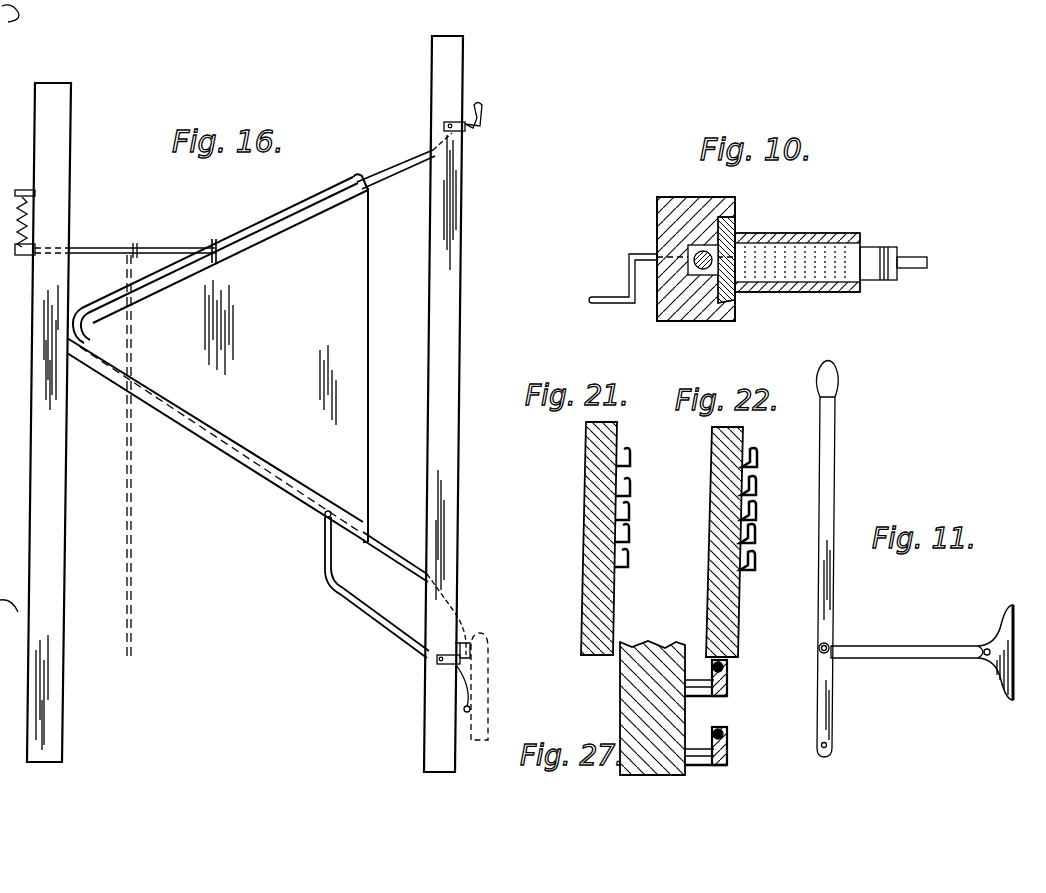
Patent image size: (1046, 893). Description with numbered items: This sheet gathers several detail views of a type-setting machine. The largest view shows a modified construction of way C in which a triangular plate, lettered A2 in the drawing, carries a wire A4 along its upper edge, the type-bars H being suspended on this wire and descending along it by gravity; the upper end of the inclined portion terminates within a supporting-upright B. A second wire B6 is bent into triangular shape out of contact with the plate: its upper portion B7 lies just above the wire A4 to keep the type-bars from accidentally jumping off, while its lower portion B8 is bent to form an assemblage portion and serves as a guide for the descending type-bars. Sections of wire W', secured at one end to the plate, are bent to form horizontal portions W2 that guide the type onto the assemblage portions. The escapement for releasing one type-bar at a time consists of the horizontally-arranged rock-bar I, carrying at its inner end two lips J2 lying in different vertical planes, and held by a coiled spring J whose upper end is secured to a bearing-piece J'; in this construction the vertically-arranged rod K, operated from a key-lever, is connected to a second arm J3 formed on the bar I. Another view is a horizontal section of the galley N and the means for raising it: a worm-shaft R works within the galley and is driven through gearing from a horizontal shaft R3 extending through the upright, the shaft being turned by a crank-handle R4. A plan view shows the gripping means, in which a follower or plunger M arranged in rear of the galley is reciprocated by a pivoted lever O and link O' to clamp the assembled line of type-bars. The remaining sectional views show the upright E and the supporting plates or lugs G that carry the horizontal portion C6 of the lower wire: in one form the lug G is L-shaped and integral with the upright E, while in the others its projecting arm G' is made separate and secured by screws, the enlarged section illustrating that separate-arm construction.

In FIG. 16, the supporting-upright B is at (28, 462).
In FIG. 16, the wire A4 is at (427, 404).
In FIG. 16, the panel section A2 is at (305, 353).
In FIG. 16, the way C is at (286, 365).
In FIG. 16, the vertically-arranged rod K is at (133, 515).
In FIG. 16, the bearing-piece J' is at (18, 182).
In FIG. 16, the coiled spring J is at (13, 222).
In FIG. 16, the escapement-bar I is at (115, 241).
In FIG. 16, the second arm J3 is at (139, 242).
In FIG. 16, the lips J2 is at (203, 226).
In FIG. 16, the upper portion of wire B6 B7 is at (220, 260).
In FIG. 16, the wire B6 is at (304, 210).
In FIG. 16, the lower portion of wire B6 B8 is at (254, 461).
In FIG. 16, the wire section W' is at (374, 584).
In FIG. 16, the type-bar H is at (480, 650).
In FIG. 10, the type-bar H is at (803, 280).
In FIG. 16, the horizontal portion W2 is at (471, 709).
In FIG. 10, the horizontal shaft R3 is at (670, 256).
In FIG. 10, the worm-shaft R is at (700, 272).
In FIG. 10, the crank-handle R4 is at (596, 296).
In FIG. 10, the galley N is at (778, 236).
In FIG. 21, the upright E is at (586, 555).
In FIG. 22, the upright E is at (712, 582).
In FIG. 27, the upright E is at (627, 716).
In FIG. 21, the supporting plate or lug G is at (636, 507).
In FIG. 27, the supporting plate or lug G is at (699, 733).
In FIG. 22, the projecting lug or arm G' is at (769, 509).
In FIG. 27, the projecting lug or arm G' is at (744, 709).
In FIG. 22, the horizontal portion of lower wire C6 is at (763, 655).
In FIG. 27, the horizontal portion of lower wire C6 is at (727, 664).
In FIG. 11, the pivoted lever O is at (838, 559).
In FIG. 11, the link O' is at (904, 664).
In FIG. 11, the follower or plunger M is at (1008, 666).